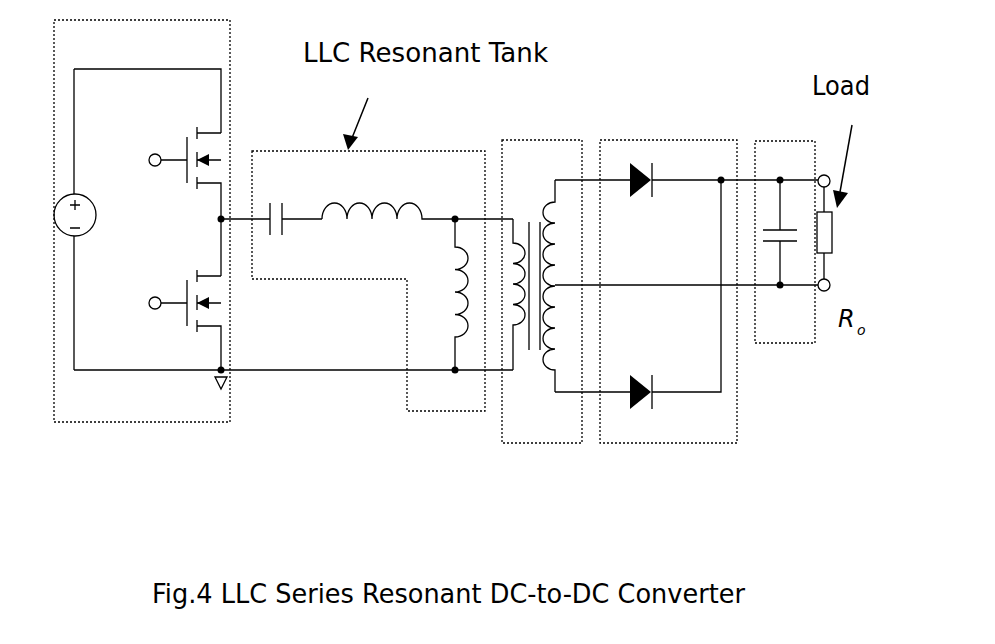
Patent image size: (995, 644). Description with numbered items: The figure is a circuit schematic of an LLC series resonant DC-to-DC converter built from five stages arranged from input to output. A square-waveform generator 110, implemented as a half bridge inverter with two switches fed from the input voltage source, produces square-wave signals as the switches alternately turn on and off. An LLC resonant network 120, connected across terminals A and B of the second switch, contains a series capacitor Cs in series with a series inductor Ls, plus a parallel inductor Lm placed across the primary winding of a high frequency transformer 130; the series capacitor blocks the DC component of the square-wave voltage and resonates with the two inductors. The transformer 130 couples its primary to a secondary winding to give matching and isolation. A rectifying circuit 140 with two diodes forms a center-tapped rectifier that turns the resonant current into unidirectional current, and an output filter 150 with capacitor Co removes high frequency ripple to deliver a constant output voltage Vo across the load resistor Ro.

The square-waveform generator 110 is at (153, 422).
The LLC resonant network 120 is at (407, 393).
The high frequency transformer 130 is at (503, 424).
The rectifying circuit 140 is at (660, 443).
The output filter 150 is at (800, 343).